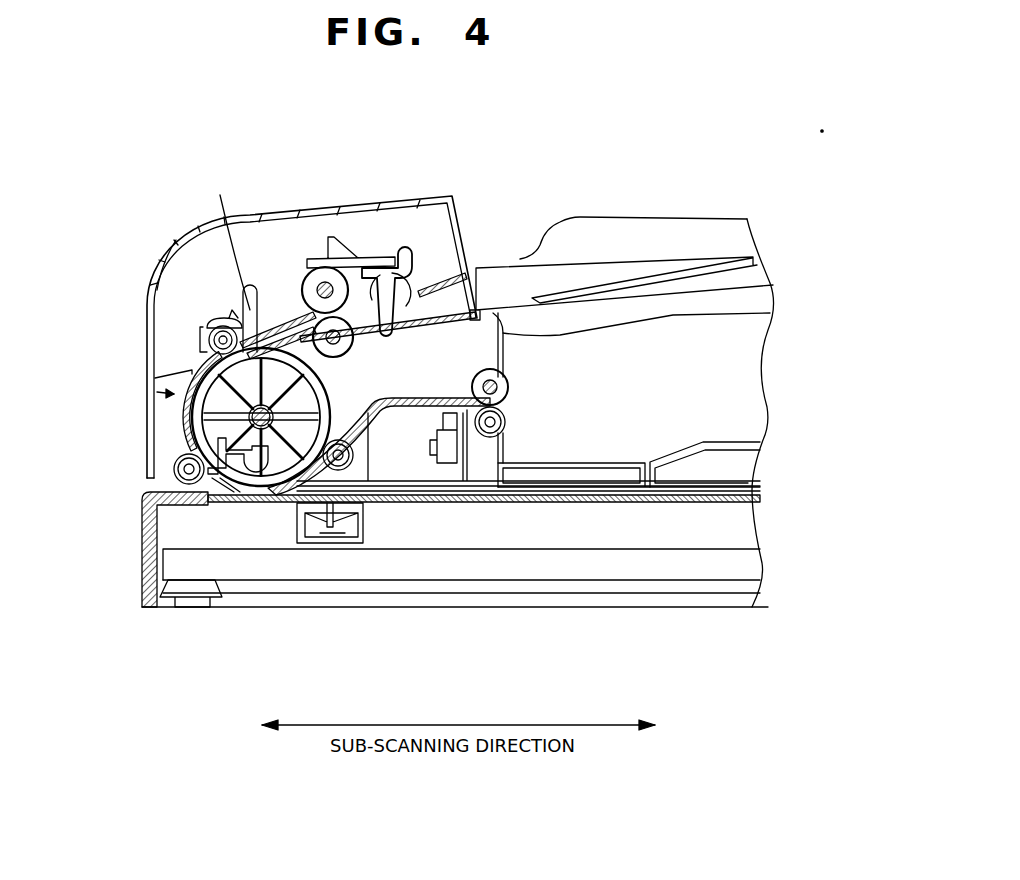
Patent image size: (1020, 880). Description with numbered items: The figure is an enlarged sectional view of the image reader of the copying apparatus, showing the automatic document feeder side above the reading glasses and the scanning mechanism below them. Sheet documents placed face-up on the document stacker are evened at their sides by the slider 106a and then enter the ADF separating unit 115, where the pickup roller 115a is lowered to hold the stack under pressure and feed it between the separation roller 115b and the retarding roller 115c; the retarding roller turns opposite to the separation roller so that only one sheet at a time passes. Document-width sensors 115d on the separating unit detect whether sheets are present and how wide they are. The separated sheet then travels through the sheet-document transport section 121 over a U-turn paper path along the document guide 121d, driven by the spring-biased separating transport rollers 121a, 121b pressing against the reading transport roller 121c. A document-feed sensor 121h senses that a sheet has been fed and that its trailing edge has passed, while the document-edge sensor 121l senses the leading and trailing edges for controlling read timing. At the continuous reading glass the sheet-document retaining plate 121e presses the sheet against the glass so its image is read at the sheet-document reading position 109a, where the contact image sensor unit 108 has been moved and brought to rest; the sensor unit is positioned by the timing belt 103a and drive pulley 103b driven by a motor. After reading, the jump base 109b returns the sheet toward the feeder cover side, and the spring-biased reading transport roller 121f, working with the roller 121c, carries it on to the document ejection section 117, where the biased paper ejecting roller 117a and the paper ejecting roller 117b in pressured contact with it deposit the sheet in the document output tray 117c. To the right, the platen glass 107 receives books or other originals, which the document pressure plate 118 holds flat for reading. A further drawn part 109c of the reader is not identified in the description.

The timing belt 103a is at (528, 563).
The drive pulley 103b is at (163, 607).
The slider 106a is at (523, 257).
The platen glass 107 is at (570, 502).
The contact image sensor unit 108 is at (330, 545).
The sheet-document reading position 109a is at (238, 503).
The jump base 109b is at (163, 567).
The platen frame rail 109c is at (273, 500).
The ADF separating unit 115 is at (187, 302).
The pickup roller 115a is at (373, 250).
The separation roller 115b is at (310, 255).
The retarding roller 115c is at (250, 285).
The document-width sensors 115d is at (398, 268).
The document ejection section 117 is at (607, 433).
The paper ejecting roller 117a is at (508, 420).
The paper ejecting roller 117b is at (510, 388).
The document output tray 117c is at (622, 456).
The document pressure plate 118 is at (678, 500).
The sheet-document transport section 121 is at (146, 380).
The separating transport roller 121a is at (198, 252).
The separating transport roller 121b is at (175, 462).
The reading transport roller 121c is at (222, 322).
The document guide 121d is at (157, 377).
The sheet-document retaining plate 121e is at (238, 502).
The reading transport roller 121f is at (345, 468).
The document-feed sensor 121h is at (223, 318).
The document-edge sensor 121l is at (155, 392).